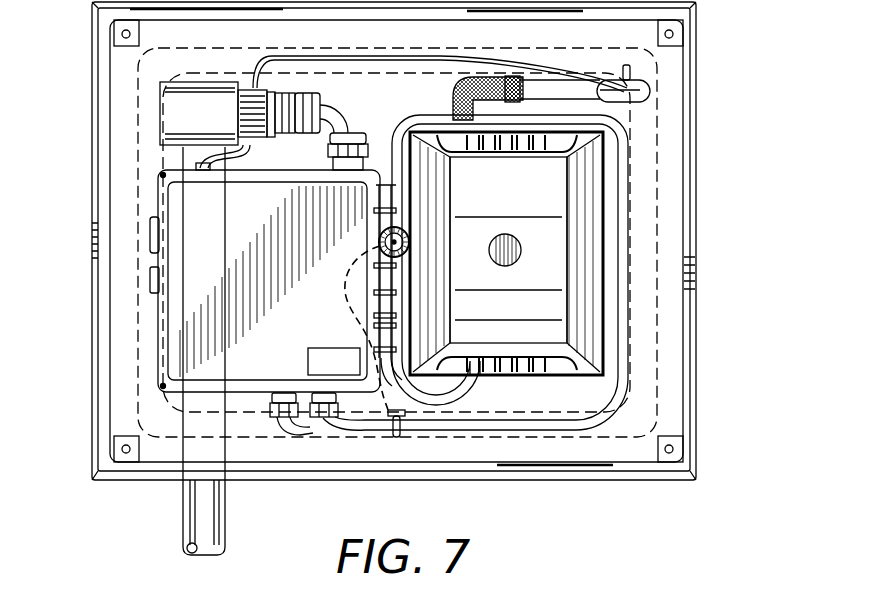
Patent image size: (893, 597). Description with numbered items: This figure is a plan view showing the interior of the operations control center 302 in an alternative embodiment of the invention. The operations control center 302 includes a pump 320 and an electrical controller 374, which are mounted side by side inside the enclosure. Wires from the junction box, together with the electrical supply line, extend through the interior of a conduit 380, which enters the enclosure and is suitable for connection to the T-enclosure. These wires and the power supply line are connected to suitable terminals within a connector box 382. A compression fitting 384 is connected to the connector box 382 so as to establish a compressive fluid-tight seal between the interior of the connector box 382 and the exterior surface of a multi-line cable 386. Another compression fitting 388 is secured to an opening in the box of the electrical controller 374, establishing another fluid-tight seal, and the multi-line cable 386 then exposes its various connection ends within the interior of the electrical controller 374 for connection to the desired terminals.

The operations control center 302 is at (722, 280).
The pump 320 is at (560, 245).
The electrical controller 374 is at (178, 344).
The conduit 380 is at (190, 527).
The connector box 382 is at (172, 110).
The compression fitting 384 is at (303, 93).
The multi-line cable 386 is at (337, 110).
The compression fitting 388 is at (330, 150).